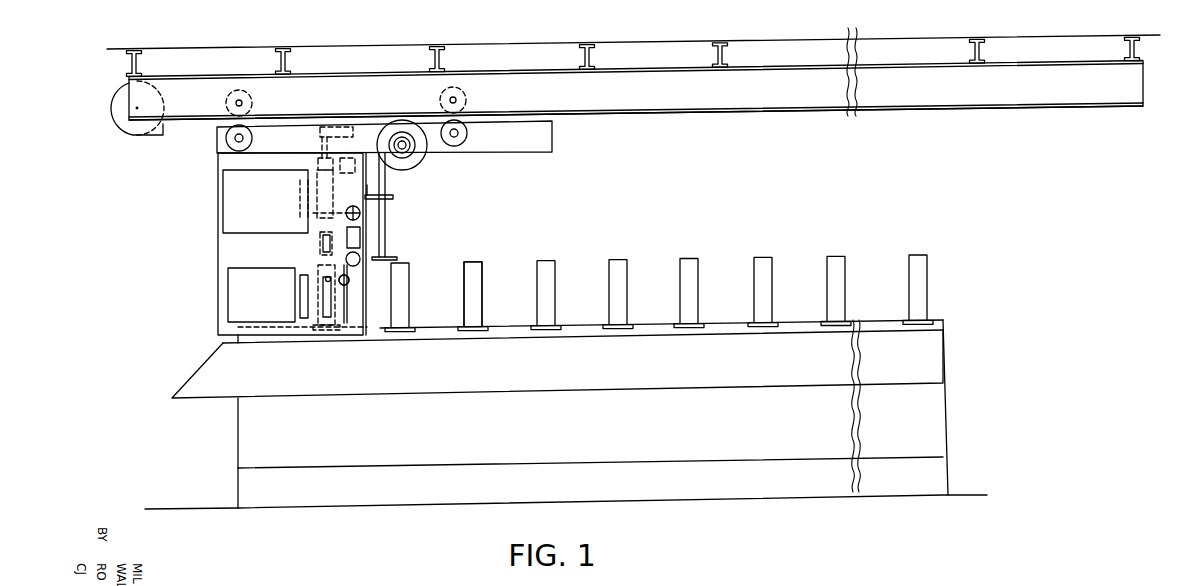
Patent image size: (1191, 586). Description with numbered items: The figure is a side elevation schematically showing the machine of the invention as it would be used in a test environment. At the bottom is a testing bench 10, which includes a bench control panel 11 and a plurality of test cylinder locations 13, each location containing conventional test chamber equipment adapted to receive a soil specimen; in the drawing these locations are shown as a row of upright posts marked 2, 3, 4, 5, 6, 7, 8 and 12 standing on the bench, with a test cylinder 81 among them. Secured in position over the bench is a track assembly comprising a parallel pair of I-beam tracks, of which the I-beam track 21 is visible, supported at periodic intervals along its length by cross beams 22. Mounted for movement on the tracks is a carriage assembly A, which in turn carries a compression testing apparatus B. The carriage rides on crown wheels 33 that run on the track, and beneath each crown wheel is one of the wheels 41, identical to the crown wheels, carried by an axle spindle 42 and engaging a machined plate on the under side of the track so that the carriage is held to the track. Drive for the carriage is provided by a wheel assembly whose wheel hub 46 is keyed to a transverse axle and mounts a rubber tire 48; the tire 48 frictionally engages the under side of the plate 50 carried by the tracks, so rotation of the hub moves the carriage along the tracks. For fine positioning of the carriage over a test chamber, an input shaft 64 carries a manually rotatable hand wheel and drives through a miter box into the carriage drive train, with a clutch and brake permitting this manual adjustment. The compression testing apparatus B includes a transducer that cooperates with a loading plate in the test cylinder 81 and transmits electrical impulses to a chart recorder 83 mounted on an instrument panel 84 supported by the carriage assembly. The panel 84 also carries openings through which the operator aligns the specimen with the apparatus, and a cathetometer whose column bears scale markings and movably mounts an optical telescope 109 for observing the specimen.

The testing bench 10 is at (345, 488).
The bench control panel 11 is at (257, 373).
The test cylinder locations 13 is at (868, 241).
The I-beam track 21 is at (1143, 92).
The cross beams 22 is at (592, 44).
The crown wheels 33 is at (252, 100).
The wheels 41 is at (217, 135).
The axle spindle 42 is at (253, 140).
The wheel hub 46 is at (413, 150).
The rubber tire 48 is at (410, 152).
The plate 50 is at (572, 118).
The shaft 64 is at (387, 232).
The test cylinder 81 is at (482, 285).
The chart recorder 83 is at (228, 215).
The instrument panel 84 is at (227, 252).
The optical telescope 109 is at (350, 278).
The carriage assembly A is at (85, 246).
The compression testing apparatus B is at (300, 195).
The station post 2 is at (400, 297).
The station post 3 is at (473, 296).
The station post 4 is at (546, 295).
The station post 5 is at (618, 294).
The station post 6 is at (689, 293).
The station post 7 is at (763, 291).
The station post 8 is at (836, 290).
The station post 12 is at (918, 289).